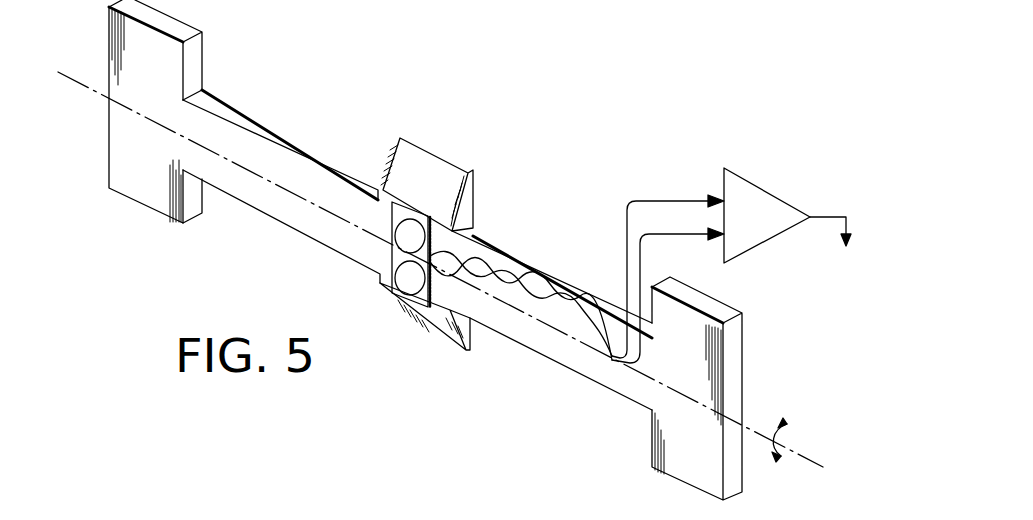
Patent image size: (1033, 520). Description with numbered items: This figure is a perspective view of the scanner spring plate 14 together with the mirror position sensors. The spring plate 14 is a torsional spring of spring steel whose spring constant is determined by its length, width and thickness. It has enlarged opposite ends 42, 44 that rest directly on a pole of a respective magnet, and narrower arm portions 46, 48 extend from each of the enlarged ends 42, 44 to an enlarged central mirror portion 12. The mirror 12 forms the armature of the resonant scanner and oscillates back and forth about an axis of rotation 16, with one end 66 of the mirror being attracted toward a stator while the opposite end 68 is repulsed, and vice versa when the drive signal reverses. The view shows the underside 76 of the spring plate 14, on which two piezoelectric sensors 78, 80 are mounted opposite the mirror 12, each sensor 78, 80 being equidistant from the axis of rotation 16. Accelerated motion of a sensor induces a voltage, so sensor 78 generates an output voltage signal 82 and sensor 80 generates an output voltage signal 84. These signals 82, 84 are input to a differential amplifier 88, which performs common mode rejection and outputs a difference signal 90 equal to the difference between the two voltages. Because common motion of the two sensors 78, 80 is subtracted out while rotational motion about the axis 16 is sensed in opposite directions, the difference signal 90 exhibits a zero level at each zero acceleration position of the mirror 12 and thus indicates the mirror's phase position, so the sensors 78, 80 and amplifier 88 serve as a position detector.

The mirror portion 12 is at (478, 196).
The spring plate 14 is at (488, 244).
The axis of rotation 16 is at (795, 446).
The enlarged end 42 is at (744, 372).
The enlarged end 44 is at (110, 76).
The arm portion 46 is at (530, 262).
The arm portion 48 is at (300, 139).
The mirror end 66 is at (452, 168).
The mirror end 68 is at (465, 354).
The underside 76 is at (260, 164).
The piezoelectric sensor 78 is at (398, 228).
The piezoelectric sensor 80 is at (397, 270).
The output voltage signal 82 is at (643, 200).
The output voltage signal 84 is at (677, 237).
The differential amplifier 88 is at (750, 180).
The difference signal 90 is at (828, 216).